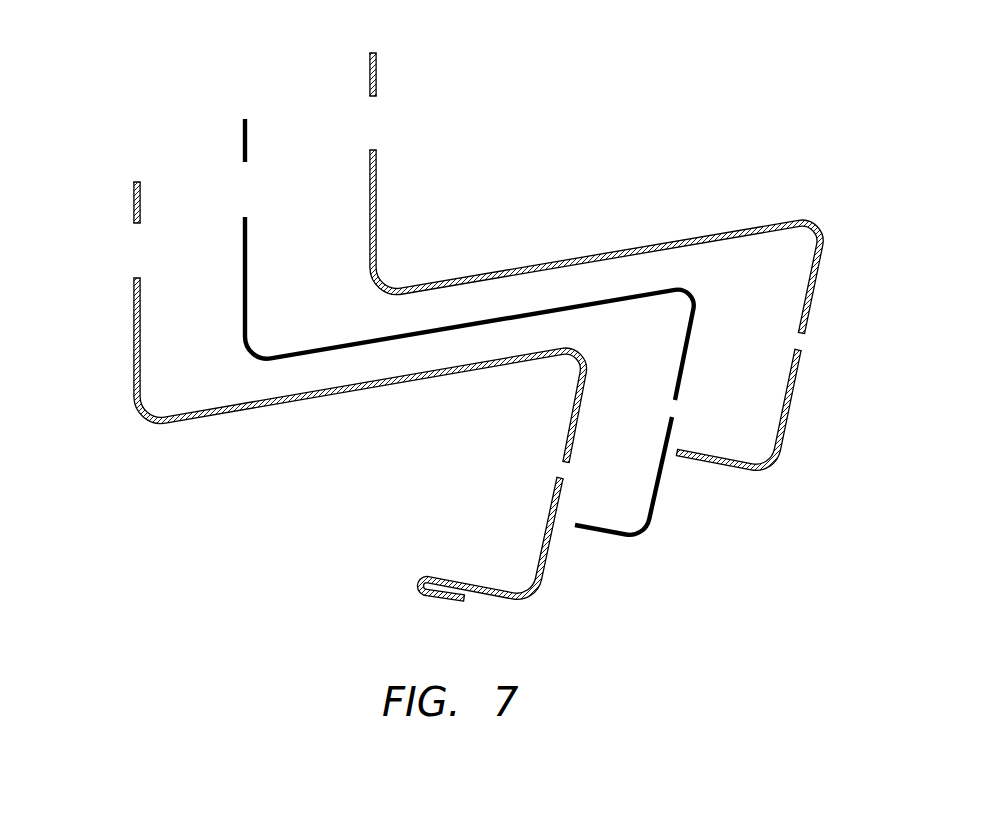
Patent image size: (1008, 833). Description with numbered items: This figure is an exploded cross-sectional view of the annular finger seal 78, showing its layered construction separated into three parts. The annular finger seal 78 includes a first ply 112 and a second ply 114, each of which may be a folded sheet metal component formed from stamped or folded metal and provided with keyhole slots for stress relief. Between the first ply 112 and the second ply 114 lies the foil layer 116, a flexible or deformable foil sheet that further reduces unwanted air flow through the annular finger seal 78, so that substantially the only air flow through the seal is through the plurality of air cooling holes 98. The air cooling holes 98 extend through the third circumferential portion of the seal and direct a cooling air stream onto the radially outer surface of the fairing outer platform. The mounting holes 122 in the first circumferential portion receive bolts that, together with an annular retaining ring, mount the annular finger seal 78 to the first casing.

The annular finger seal 78 is at (620, 80).
The air cooling holes 98 is at (565, 467).
The first ply 112 is at (133, 360).
The second ply 114 is at (377, 225).
The foil layer 116 is at (247, 285).
The mounting holes 122 is at (140, 253).